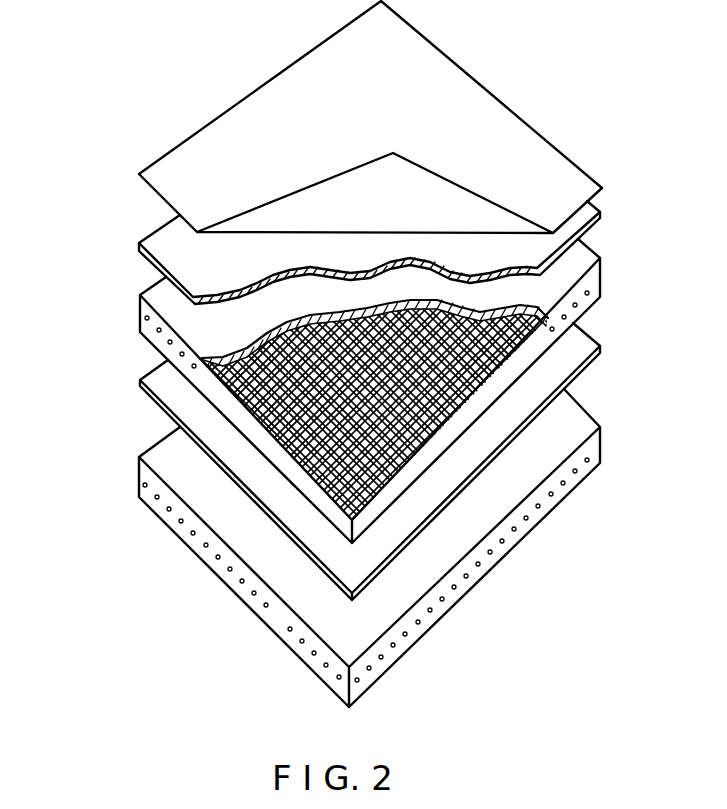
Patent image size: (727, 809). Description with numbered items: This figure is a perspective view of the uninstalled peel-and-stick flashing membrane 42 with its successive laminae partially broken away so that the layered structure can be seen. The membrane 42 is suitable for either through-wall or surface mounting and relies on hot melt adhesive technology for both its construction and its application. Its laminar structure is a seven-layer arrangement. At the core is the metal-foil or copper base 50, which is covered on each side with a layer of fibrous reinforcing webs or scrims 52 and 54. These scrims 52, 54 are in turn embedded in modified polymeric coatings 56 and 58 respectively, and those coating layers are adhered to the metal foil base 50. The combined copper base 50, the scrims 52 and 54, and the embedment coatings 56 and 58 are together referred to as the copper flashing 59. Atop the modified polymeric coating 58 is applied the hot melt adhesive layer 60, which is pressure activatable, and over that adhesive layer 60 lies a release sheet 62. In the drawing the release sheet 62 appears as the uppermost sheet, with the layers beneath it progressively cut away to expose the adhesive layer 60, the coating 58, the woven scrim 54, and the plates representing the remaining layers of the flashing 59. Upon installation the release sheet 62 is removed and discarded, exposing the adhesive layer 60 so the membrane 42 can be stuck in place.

The peel-and-stick flashing membrane 42 is at (212, 589).
The metal-foil or copper base 50 is at (140, 380).
The fibrous reinforcing web or scrim 52 is at (279, 616).
The fibrous reinforcing web or scrim 54 is at (305, 455).
The modified polymeric coating 56 is at (140, 473).
The modified polymeric coating 58 is at (331, 391).
The copper flashing 59 is at (140, 338).
The hot melt adhesive layer 60 is at (155, 247).
The release sheet 62 is at (205, 170).